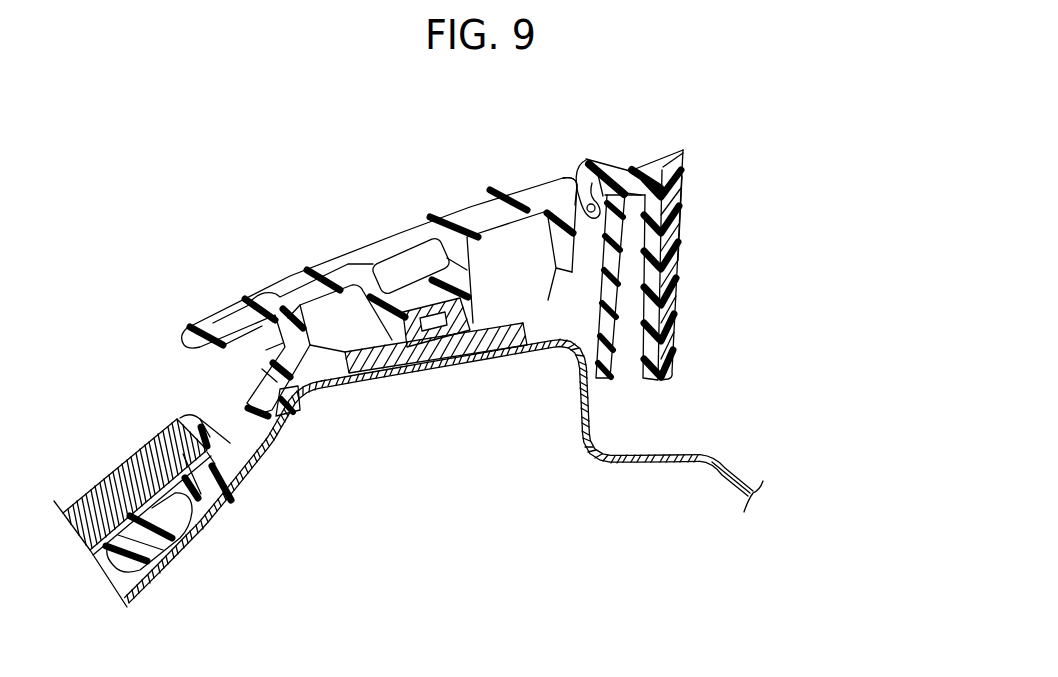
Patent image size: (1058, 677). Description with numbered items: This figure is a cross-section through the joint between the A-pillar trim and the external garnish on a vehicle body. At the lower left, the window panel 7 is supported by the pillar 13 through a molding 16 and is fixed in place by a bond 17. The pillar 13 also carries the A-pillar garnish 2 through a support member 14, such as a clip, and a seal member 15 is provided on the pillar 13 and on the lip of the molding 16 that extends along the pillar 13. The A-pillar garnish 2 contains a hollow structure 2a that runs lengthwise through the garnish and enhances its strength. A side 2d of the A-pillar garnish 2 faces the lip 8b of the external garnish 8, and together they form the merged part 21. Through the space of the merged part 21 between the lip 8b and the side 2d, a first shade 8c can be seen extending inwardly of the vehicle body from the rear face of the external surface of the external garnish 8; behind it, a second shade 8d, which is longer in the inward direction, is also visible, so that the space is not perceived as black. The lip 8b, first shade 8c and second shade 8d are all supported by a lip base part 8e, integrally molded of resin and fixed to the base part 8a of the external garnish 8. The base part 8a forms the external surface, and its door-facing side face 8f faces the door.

The A-pillar garnish 2 is at (312, 252).
The hollow structure 2a is at (410, 262).
The side of the A-pillar garnish 2d is at (561, 239).
The window panel 7 is at (120, 480).
The external garnish 8 is at (685, 232).
The base part 8a is at (668, 228).
The lip 8b is at (588, 158).
The first shade 8c is at (577, 181).
The second shade 8d is at (610, 303).
The lip base part 8e is at (628, 182).
The door-facing side face 8f is at (693, 255).
The pillar 13 is at (648, 464).
The support member 14 is at (423, 371).
The seal member 15 is at (290, 404).
The molding 16 is at (227, 500).
The bond 17 is at (153, 541).
The merged part 21 is at (572, 170).